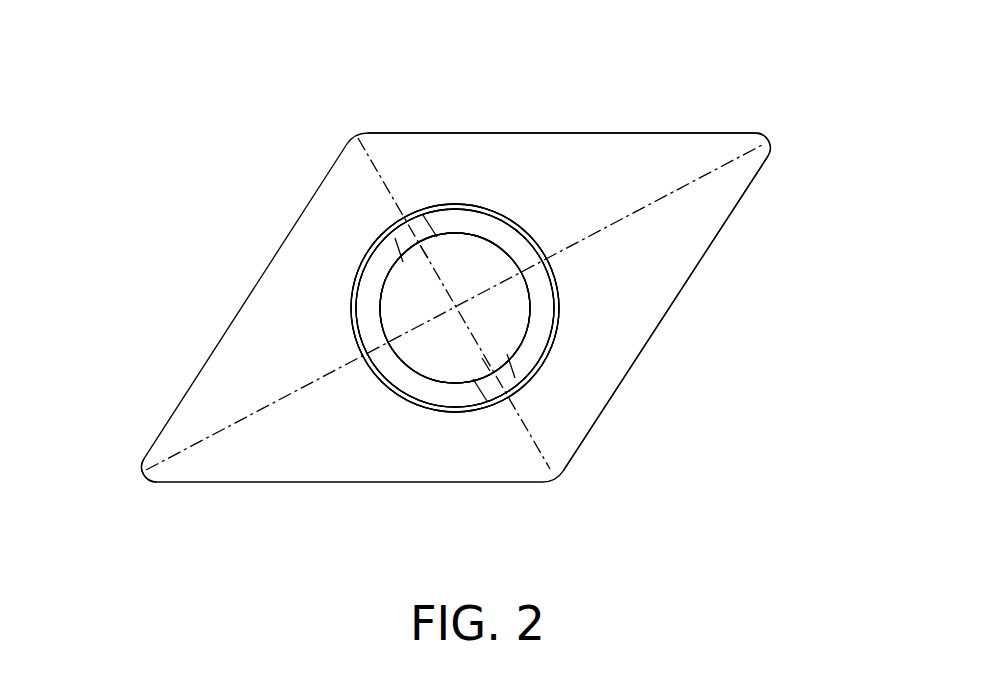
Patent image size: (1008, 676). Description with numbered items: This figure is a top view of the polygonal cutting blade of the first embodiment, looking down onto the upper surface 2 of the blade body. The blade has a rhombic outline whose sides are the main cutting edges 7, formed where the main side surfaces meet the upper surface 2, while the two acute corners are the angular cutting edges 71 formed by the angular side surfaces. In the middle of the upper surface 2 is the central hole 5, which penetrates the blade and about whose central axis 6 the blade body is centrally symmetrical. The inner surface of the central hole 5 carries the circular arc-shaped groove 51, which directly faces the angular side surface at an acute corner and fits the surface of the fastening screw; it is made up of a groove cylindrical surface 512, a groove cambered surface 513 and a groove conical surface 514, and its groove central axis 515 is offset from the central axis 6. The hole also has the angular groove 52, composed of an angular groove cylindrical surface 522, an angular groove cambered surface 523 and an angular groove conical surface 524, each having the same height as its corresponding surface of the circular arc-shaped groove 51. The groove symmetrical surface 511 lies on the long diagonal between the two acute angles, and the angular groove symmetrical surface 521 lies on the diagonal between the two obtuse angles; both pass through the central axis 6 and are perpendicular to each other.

The upper surface 2 is at (456, 307).
The central hole 5 is at (383, 266).
The circular arc-shaped groove 51 is at (376, 384).
The groove cylindrical surface 512 is at (384, 381).
The groove cambered surface 513 is at (390, 387).
The groove conical surface 514 is at (398, 403).
The groove central axis 515 is at (598, 357).
The angular groove 52 is at (547, 373).
The angular groove symmetrical surface 521 is at (500, 224).
The angular groove cylindrical surface 522 is at (535, 398).
The angular groove cambered surface 523 is at (522, 373).
The angular groove conical surface 524 is at (518, 359).
The central axis 6 is at (558, 394).
The main cutting edge 7 is at (579, 252).
The angular cutting edge 71 is at (456, 284).
The groove symmetrical surface 511 is at (479, 258).